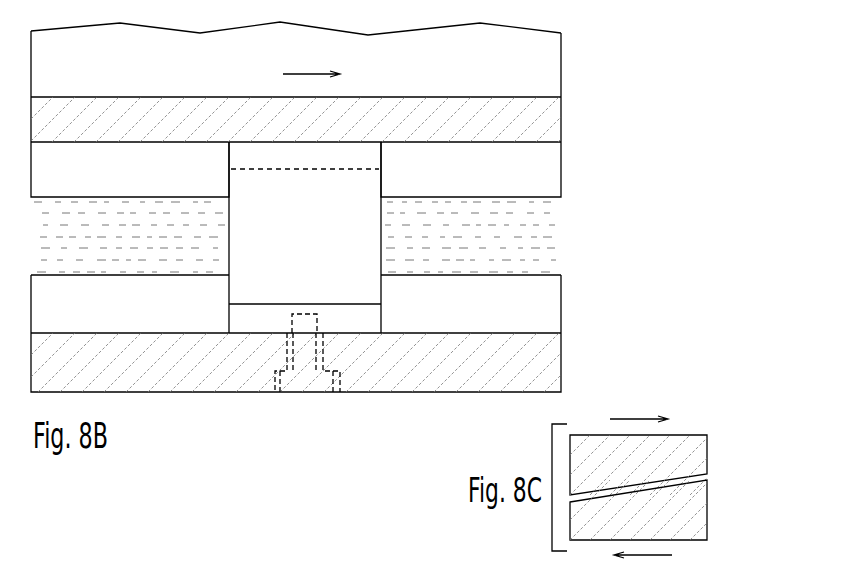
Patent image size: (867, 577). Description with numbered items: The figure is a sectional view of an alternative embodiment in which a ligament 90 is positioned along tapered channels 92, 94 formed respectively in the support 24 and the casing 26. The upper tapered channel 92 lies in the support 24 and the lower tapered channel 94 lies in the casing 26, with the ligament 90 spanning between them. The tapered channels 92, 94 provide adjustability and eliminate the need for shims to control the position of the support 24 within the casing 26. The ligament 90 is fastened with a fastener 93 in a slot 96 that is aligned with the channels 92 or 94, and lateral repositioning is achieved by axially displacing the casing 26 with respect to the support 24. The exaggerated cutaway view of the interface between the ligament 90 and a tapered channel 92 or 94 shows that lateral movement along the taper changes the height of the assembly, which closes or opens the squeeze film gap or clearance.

In FIG. 8B, the support 24 is at (551, 120).
In FIG. 8B, the tapered channel 92 is at (548, 143).
In FIG. 8B, the ligament 90 is at (228, 287).
In FIG. 8C, the ligament 90 is at (694, 455).
In FIG. 8B, the tapered channel 94 is at (548, 333).
In FIG. 8B, the casing 26 is at (550, 363).
In FIG. 8C, the casing 26 is at (694, 513).
In FIG. 8B, the fastener 93 is at (305, 393).
In FIG. 8B, the slot 96 is at (342, 376).